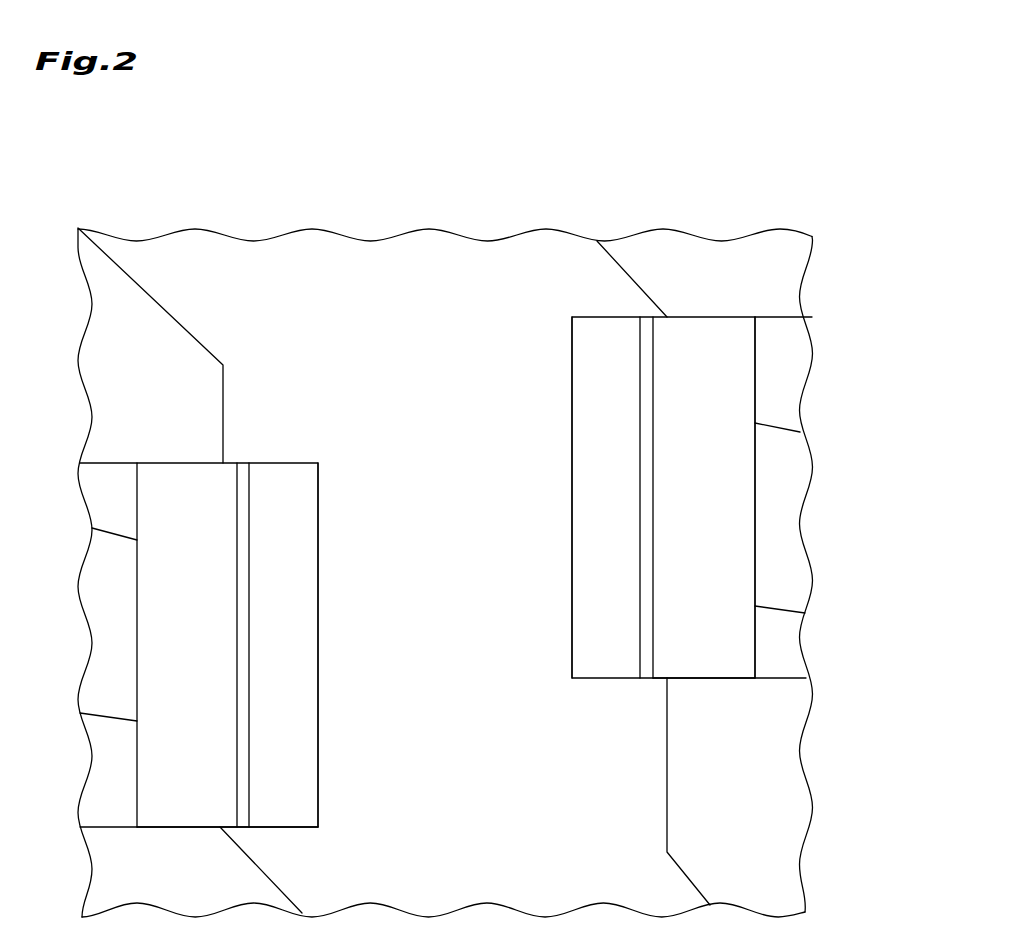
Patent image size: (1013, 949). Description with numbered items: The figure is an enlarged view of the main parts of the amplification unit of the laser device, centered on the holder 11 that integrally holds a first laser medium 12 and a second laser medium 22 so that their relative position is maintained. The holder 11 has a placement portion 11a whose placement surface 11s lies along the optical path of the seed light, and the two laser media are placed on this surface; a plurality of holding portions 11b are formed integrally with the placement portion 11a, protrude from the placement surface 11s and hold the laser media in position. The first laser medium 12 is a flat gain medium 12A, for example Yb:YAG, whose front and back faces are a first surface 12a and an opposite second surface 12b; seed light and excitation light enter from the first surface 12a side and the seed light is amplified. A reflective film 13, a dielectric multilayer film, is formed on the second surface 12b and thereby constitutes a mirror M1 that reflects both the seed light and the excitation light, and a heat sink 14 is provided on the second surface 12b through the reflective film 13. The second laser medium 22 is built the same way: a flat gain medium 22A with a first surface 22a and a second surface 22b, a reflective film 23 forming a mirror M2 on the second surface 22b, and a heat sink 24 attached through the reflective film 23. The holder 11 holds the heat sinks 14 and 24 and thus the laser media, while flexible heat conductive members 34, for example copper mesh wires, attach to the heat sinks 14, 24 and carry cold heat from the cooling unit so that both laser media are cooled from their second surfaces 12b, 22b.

The holder 11 is at (483, 240).
The placement surface 11s is at (445, 217).
The placement portion 11a is at (373, 262).
The holding portion 11b is at (160, 335).
The first laser medium 12 is at (307, 643).
The gain medium 12A is at (300, 463).
The first surface 12a is at (318, 598).
The second surface 12b is at (360, 645).
The mirror M1 is at (246, 681).
The reflective film 13 is at (242, 463).
The heat sink 14 is at (183, 815).
The second laser medium 22 is at (610, 500).
The gain medium 22A is at (600, 317).
The first surface 22a is at (573, 542).
The second surface 22b is at (555, 506).
The mirror M2 is at (642, 603).
The reflective film 23 is at (648, 672).
The heat sink 24 is at (705, 667).
The heat conductive member 34 is at (785, 507).